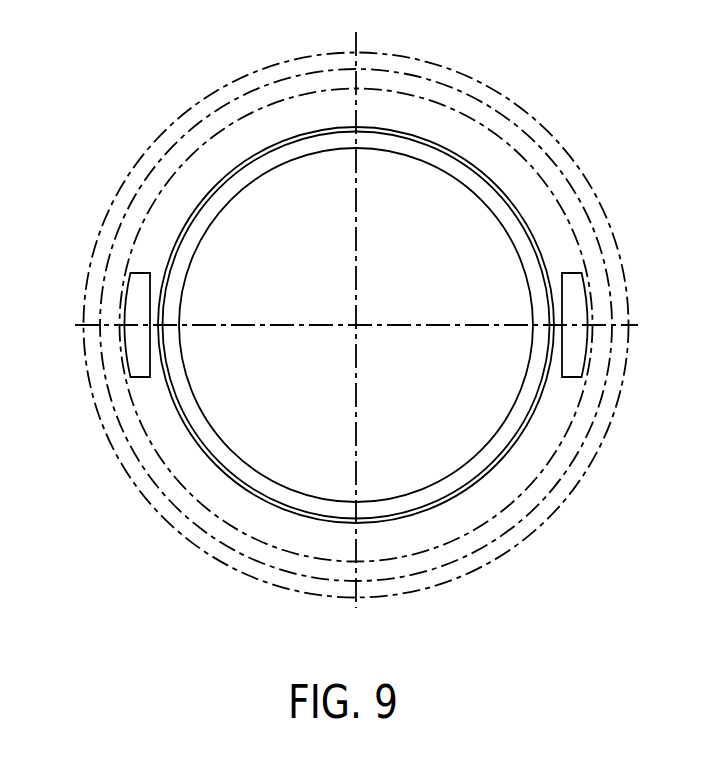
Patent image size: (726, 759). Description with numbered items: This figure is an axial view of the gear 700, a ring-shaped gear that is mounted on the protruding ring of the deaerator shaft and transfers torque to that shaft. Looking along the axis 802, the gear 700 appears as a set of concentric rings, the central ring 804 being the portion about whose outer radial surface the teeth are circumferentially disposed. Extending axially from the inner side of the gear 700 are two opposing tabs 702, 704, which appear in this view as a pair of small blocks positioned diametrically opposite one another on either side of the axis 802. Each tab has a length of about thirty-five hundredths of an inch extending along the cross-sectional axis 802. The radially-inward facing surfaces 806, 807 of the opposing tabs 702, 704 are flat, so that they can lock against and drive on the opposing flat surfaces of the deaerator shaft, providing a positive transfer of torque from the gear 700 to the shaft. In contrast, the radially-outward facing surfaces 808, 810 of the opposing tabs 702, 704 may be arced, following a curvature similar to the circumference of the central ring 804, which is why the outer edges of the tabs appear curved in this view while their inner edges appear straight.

The gear 700 is at (562, 102).
The opposing tab 702 is at (130, 357).
The opposing tab 704 is at (619, 313).
The axis 802 is at (360, 245).
The central ring 804 is at (538, 450).
The radially-inward facing surface 806 is at (152, 300).
The radially-inward facing surface 807 is at (556, 287).
The radially-outward facing surface 808 is at (88, 369).
The radially-outward facing surface 810 is at (586, 285).